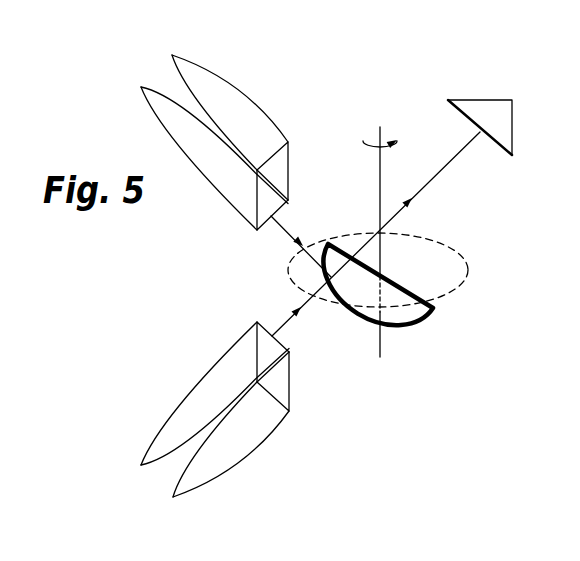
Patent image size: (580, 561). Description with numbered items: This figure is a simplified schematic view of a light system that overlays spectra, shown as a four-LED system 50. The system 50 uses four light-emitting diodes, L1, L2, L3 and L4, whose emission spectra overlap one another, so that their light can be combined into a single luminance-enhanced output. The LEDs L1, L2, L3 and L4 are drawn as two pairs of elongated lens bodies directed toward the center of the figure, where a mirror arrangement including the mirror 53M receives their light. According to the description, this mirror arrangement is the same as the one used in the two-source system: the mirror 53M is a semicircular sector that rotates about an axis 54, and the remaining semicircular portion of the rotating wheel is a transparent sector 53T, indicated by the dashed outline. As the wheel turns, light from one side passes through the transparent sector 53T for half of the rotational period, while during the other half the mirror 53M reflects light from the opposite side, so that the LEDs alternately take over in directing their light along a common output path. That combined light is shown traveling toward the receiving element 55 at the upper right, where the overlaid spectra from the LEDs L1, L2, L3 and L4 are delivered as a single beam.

The four-LED system 50 is at (145, 324).
The LED L1 is at (195, 147).
The LED L2 is at (192, 409).
The LED L3 is at (216, 116).
The LED L4 is at (214, 441).
The mirror 53M is at (275, 272).
The rotating table of the mirror 53T is at (436, 272).
The rotation axis 54 is at (376, 124).
The prism (light receiving side) 55 is at (446, 97).